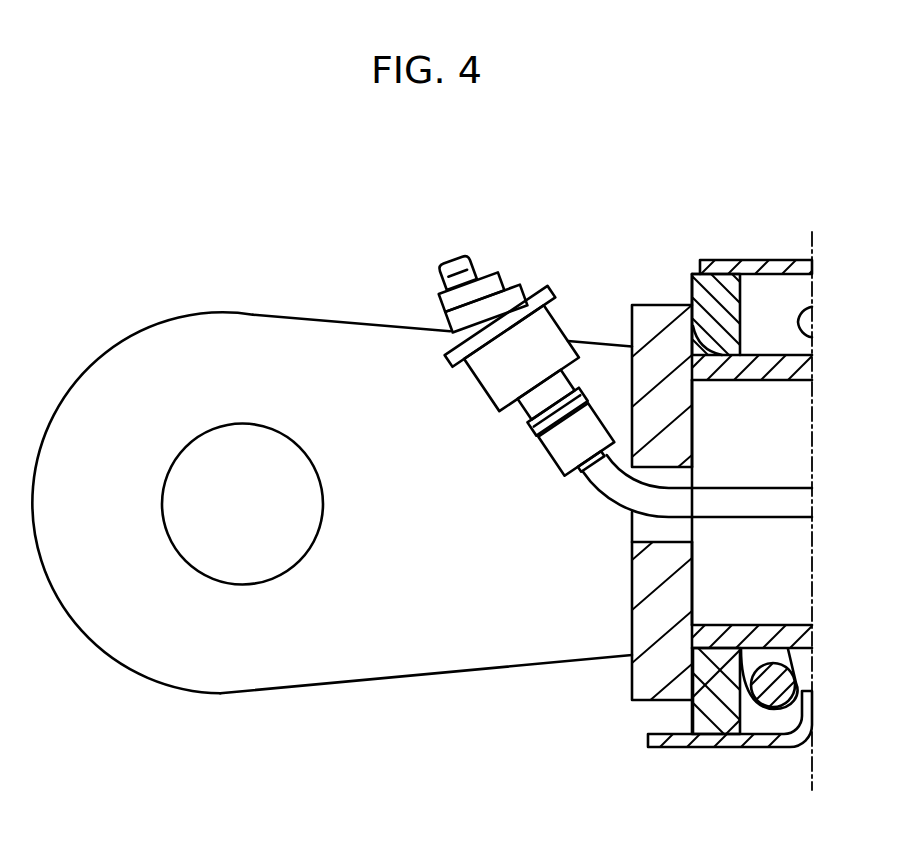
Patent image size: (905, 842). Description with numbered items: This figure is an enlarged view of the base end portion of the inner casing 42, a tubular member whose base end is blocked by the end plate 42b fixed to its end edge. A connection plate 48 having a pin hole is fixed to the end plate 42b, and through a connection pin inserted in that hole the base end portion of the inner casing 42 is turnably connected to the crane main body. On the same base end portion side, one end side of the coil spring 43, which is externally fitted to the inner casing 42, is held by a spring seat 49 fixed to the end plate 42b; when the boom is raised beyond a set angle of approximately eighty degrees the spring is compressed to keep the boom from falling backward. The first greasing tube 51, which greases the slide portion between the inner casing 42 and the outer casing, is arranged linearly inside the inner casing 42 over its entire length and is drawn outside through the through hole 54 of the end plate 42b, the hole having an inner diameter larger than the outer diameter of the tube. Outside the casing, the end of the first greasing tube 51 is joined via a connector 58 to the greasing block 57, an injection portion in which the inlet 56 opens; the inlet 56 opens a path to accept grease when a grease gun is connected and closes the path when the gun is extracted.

The inner casing 42 is at (767, 368).
The end plate 42b is at (658, 317).
The coil spring 43 is at (794, 680).
The connection plate 48 is at (185, 343).
The spring seat 49 is at (722, 718).
The first greasing tube 51 is at (752, 500).
The through hole 54 is at (640, 531).
The inlet 56 is at (453, 260).
The greasing block 57 is at (492, 381).
The connector 58 is at (560, 463).